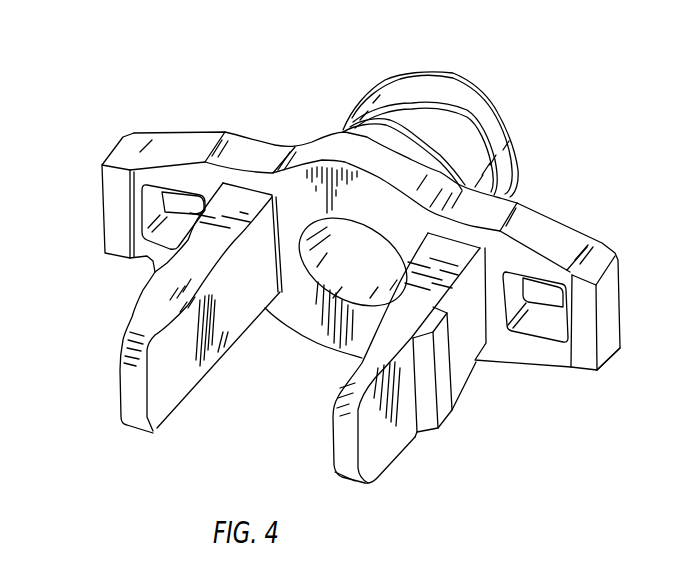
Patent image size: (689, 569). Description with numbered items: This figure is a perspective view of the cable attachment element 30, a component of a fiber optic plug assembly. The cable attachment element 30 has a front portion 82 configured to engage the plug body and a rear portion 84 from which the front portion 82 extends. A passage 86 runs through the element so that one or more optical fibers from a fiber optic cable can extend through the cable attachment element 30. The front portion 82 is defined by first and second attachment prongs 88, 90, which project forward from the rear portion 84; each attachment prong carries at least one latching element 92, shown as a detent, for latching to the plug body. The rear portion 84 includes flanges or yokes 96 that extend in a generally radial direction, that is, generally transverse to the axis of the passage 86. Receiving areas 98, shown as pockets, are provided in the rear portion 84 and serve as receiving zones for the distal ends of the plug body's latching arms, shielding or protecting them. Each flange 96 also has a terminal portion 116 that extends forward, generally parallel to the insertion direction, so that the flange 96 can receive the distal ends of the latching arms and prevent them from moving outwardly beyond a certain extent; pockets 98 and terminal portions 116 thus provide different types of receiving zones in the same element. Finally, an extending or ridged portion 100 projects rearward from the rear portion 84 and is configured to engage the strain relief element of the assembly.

The cable attachment element 30 is at (93, 80).
The front portion 82 is at (193, 403).
The rear portion 84 is at (558, 217).
The passage 86 is at (340, 288).
The first attachment prong 88 is at (140, 427).
The second attachment prong 90 is at (390, 473).
The latching element 92 is at (150, 265).
The flange 96 is at (252, 147).
The receiving area 98 is at (183, 202).
The extending portion 100 is at (493, 102).
The terminal portion 116 is at (608, 362).